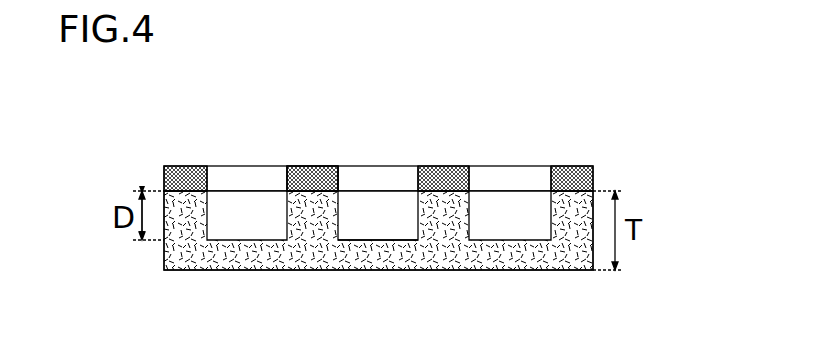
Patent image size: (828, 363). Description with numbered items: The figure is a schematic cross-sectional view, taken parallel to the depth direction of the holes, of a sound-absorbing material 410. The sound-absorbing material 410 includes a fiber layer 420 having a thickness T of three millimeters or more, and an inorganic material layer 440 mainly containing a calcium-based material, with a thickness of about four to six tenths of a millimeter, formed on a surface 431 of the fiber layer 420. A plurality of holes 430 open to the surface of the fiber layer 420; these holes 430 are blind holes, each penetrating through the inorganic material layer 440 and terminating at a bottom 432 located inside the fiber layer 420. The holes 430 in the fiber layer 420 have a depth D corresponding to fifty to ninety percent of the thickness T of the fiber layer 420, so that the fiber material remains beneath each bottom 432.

The sound-absorbing material 410 is at (343, 199).
The fiber layer 420 is at (252, 247).
The holes 430 is at (515, 207).
The surface 431 is at (312, 197).
The bottom 432 is at (367, 240).
The inorganic material layer 440 is at (575, 172).